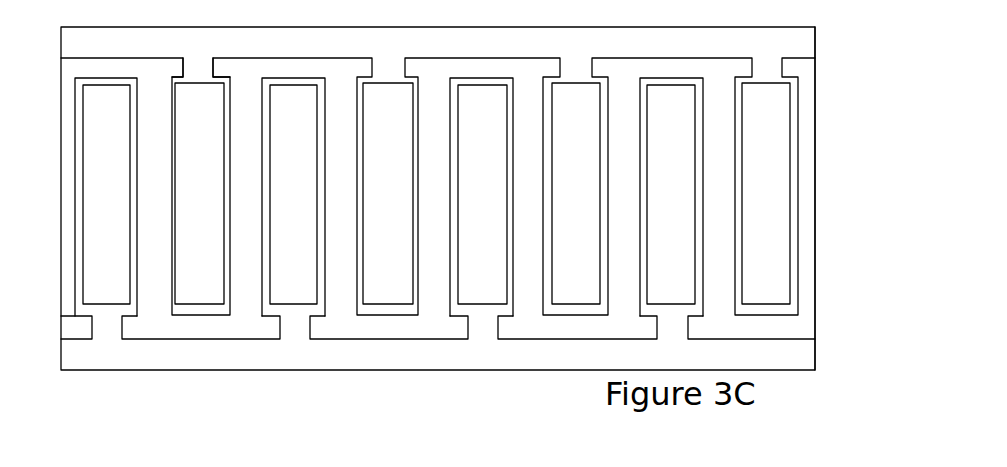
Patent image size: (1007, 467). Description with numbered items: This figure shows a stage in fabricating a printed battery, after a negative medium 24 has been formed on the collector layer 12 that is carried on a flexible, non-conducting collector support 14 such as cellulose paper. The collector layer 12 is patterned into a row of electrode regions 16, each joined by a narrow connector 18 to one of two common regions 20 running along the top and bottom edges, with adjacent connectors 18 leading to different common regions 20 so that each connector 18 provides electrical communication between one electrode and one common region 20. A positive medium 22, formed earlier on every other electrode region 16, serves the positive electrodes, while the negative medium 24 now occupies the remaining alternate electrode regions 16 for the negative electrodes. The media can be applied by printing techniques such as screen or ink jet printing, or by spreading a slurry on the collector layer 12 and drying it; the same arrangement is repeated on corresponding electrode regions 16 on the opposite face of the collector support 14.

The collector layer 12 is at (202, 43).
The collector support 14 is at (817, 78).
The electrode region 16 is at (67, 82).
The connector 18 is at (347, 67).
The common region 20 is at (826, 41).
The positive medium 22 is at (213, 203).
The negative medium 24 is at (118, 118).